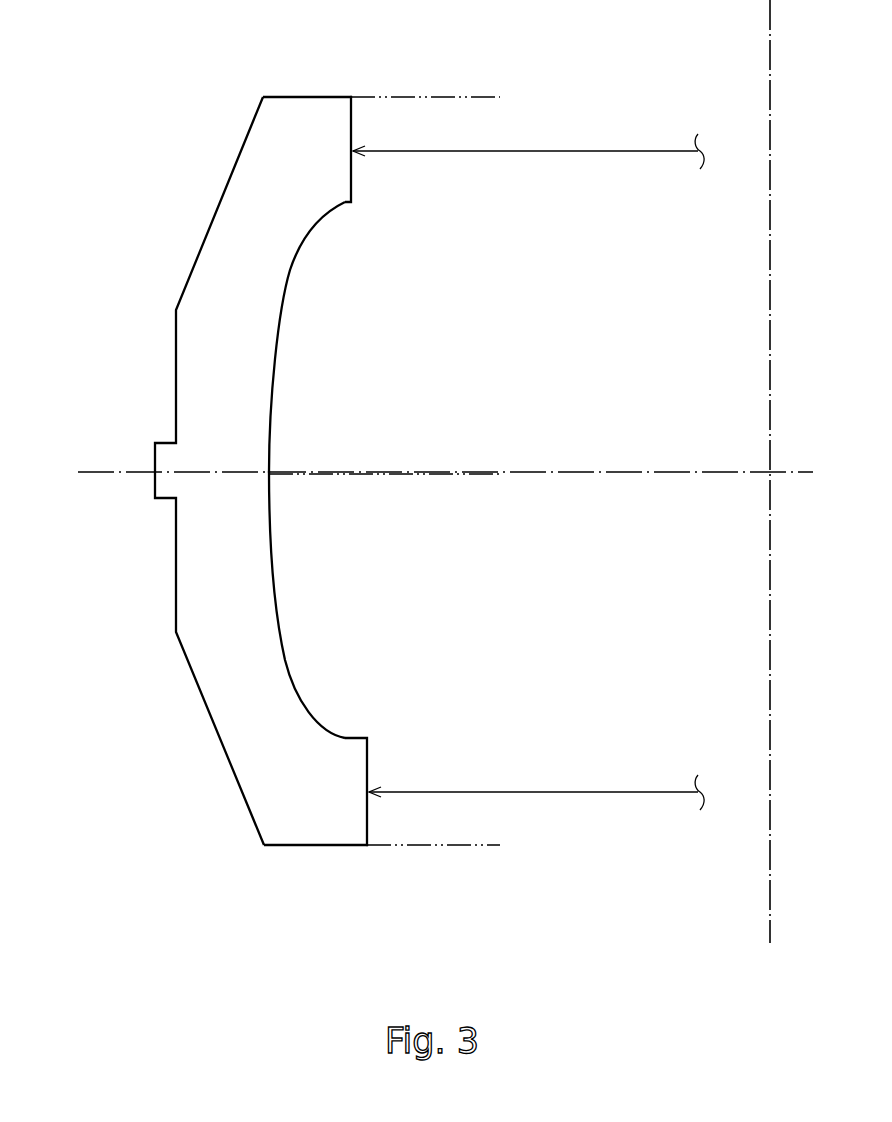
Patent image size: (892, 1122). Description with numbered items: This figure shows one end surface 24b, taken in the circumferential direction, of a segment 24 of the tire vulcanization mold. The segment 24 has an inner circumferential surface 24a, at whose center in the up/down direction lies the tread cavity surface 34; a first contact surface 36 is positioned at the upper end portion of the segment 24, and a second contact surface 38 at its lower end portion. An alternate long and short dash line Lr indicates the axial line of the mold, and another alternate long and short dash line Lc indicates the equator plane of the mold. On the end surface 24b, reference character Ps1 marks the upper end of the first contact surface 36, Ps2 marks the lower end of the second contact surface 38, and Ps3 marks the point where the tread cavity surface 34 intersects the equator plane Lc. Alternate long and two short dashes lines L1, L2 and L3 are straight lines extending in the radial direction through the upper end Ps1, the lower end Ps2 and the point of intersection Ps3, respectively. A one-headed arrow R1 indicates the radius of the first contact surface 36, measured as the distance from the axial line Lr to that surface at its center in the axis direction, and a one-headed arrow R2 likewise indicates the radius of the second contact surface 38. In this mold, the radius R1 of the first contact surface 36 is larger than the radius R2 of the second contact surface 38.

The segment 24 is at (255, 471).
The inner circumferential surface 24a is at (273, 378).
The end surface 24b is at (222, 261).
The tread cavity surface 34 is at (273, 590).
The first contact surface 36 is at (352, 122).
The second contact surface 38 is at (368, 817).
The upper end Ps1 is at (352, 96).
The lower end Ps2 is at (368, 847).
The point of intersection Ps3 is at (270, 471).
The straight line L1 is at (445, 96).
The straight line L2 is at (448, 847).
The straight line L3 is at (442, 476).
The equator plane Lc is at (602, 470).
The axial line Lr is at (770, 914).
The radius of the first contact surface R1 is at (528, 146).
The radius of the second contact surface R2 is at (536, 788).